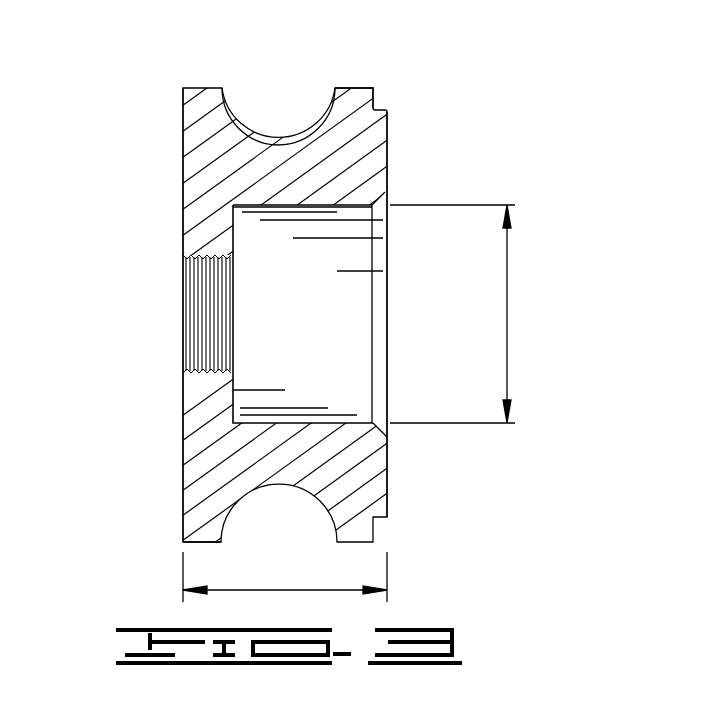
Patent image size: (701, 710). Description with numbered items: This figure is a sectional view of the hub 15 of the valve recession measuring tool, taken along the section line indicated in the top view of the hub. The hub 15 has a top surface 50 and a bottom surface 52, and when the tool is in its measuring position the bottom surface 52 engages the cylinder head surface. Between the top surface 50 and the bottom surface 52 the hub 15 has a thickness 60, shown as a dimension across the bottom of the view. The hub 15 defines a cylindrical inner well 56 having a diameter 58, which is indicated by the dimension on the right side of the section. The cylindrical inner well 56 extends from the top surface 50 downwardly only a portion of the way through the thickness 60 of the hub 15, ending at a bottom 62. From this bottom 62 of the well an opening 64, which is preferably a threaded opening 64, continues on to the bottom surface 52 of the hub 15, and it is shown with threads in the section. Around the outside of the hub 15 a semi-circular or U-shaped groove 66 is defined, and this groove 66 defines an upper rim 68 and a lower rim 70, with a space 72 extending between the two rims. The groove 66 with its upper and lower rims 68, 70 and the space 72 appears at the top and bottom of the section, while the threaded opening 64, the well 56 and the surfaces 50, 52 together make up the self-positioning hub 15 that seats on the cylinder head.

The hub 15 is at (387, 148).
The top surface 50 is at (388, 485).
The bottom surface 52 is at (183, 484).
The cylindrical inner well 56 is at (385, 392).
The diameter 58 is at (508, 310).
The thickness 60 is at (300, 590).
The bottom 62 is at (236, 246).
The threaded opening 64 is at (201, 372).
The U-shaped groove 66 is at (262, 138).
The upper rim 68 is at (373, 88).
The lower rim 70 is at (183, 108).
The space 72 is at (292, 113).